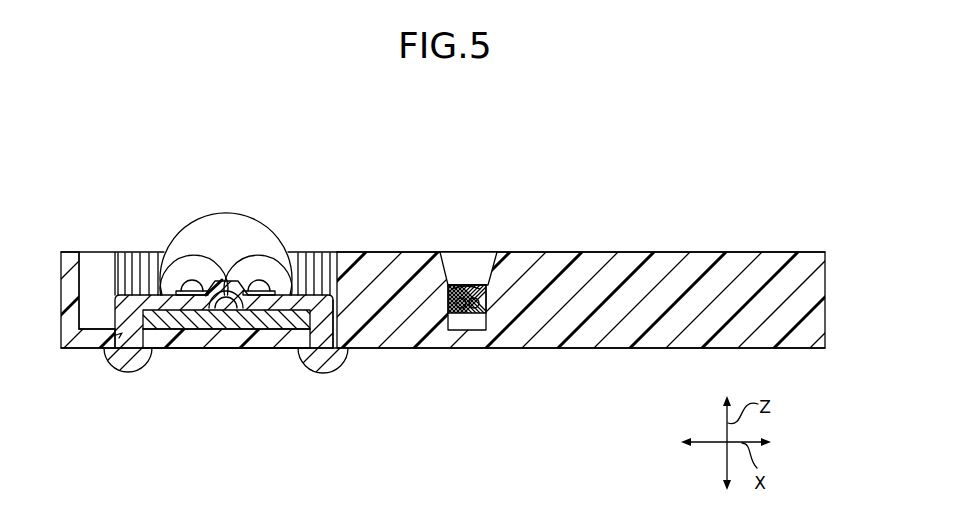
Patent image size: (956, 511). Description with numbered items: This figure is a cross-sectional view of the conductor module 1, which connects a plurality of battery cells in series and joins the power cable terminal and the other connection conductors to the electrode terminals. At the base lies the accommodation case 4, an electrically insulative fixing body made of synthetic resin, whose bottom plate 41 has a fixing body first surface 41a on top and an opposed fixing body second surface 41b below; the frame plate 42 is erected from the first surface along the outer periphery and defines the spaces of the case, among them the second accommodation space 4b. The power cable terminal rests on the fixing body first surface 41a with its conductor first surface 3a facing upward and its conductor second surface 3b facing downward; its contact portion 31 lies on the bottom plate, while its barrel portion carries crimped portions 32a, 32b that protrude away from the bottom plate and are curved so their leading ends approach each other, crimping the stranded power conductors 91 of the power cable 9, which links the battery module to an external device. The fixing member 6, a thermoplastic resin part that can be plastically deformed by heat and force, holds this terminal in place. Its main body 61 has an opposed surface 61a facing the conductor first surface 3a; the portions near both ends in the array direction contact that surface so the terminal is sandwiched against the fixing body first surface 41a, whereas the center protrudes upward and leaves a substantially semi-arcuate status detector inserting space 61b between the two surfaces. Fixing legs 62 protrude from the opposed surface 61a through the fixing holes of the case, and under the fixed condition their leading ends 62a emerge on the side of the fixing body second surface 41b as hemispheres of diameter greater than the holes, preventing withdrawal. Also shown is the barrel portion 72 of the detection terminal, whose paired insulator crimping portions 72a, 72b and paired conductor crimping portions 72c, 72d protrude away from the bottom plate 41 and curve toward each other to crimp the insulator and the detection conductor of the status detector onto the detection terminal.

The conductor module 1 is at (100, 135).
The conductor first surface 3a is at (157, 292).
The conductor second surface 3b is at (266, 348).
The accommodation case 4 is at (830, 296).
The second accommodation space 4b is at (101, 277).
The bottom plate 41 is at (82, 338).
The fixing body first surface 41a is at (83, 270).
The fixing body second surface 41b is at (186, 348).
The frame plate 42 is at (797, 252).
The fixing member 6 is at (226, 268).
The power cable 9 is at (227, 205).
The contact portion 31 is at (172, 318).
The crimped portion 32a is at (196, 257).
The crimped portion 32b is at (262, 258).
The main body 61 is at (128, 290).
The opposed surface 61a is at (292, 330).
The status detector inserting space 61b is at (229, 330).
The fixing leg 62 is at (103, 338).
The leading end 62a is at (132, 365).
The barrel portion 72 is at (476, 288).
The insulator crimping portion 72a is at (462, 284).
The insulator crimping portion 72b is at (478, 283).
The conductor crimping portion 72c is at (452, 291).
The conductor crimping portion 72d is at (487, 287).
The power conductor 91 is at (192, 268).